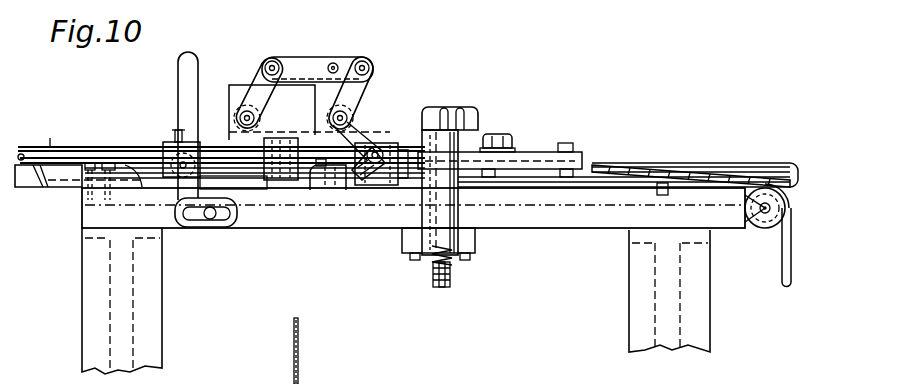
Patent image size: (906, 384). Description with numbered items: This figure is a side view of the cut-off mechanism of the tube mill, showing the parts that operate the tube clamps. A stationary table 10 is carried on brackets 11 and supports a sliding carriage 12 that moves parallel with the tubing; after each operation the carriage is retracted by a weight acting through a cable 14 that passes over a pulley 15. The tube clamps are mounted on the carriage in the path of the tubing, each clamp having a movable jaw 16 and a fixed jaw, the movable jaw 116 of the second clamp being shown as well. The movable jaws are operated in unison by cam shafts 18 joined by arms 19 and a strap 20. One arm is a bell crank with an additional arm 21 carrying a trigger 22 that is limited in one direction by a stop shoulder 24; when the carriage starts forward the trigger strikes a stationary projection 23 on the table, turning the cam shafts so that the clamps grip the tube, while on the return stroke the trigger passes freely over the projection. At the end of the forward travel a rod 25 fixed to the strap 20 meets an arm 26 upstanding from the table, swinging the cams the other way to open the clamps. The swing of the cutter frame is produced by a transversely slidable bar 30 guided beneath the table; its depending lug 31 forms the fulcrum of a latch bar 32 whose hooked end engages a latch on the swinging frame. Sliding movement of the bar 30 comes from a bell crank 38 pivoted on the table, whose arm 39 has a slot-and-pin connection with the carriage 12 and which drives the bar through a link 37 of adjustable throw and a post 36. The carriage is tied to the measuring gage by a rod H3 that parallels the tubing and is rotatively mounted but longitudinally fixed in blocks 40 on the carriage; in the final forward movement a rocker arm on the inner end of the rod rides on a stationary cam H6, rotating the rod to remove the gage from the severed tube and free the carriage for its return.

The rod H3 is at (72, 133).
The stationary cam H6 is at (63, 183).
The stationary table 10 is at (554, 229).
The brackets 11 is at (155, 300).
The sliding carriage 12 is at (620, 186).
The cable 14 is at (690, 176).
The pulley 15 is at (168, 150).
The movable jaw 16 is at (312, 131).
The link 116 is at (245, 94).
The cam shafts 18 is at (345, 118).
The arms 19 is at (330, 108).
The strap 20 is at (316, 58).
The additional arm 21 is at (380, 146).
The trigger 22 is at (385, 195).
The projection 23 is at (320, 203).
The stop shoulder 24 is at (381, 160).
The rod 25 is at (337, 66).
The arm 26 is at (176, 77).
The transversely slidable bar 30 is at (452, 238).
The depending lug 31 is at (450, 280).
The latch bar 32 is at (440, 288).
The post 36 is at (443, 212).
The link 37 is at (479, 125).
The bell crank 38 is at (513, 152).
The arm 39 is at (572, 153).
The blocks 40 is at (282, 195).